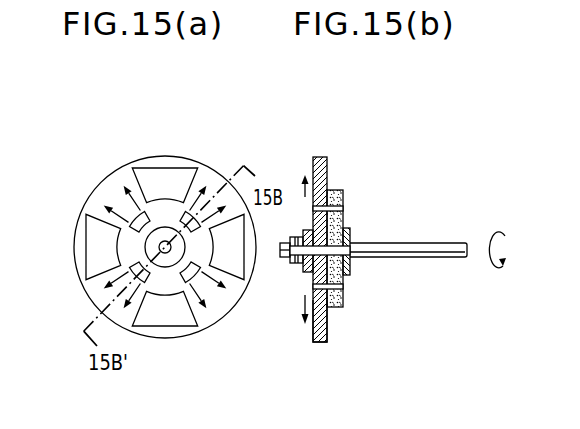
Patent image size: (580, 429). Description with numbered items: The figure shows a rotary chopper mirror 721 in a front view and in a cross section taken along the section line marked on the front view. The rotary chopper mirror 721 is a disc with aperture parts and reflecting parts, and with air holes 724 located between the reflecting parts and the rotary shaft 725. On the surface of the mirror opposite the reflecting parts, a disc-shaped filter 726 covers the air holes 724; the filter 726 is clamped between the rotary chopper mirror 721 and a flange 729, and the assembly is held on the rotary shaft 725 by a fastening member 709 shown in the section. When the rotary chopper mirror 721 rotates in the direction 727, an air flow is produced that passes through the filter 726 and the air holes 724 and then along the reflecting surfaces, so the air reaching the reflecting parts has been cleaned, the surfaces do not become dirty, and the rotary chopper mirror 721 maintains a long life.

The fastening bolt and nut 709 is at (304, 270).
The rotary chopper mirror 721 is at (318, 343).
The air holes 724 is at (196, 287).
The rotary shaft 725 is at (334, 191).
The filter 726 is at (440, 258).
The direction of rotation 727 is at (509, 229).
The flange 729 is at (346, 237).